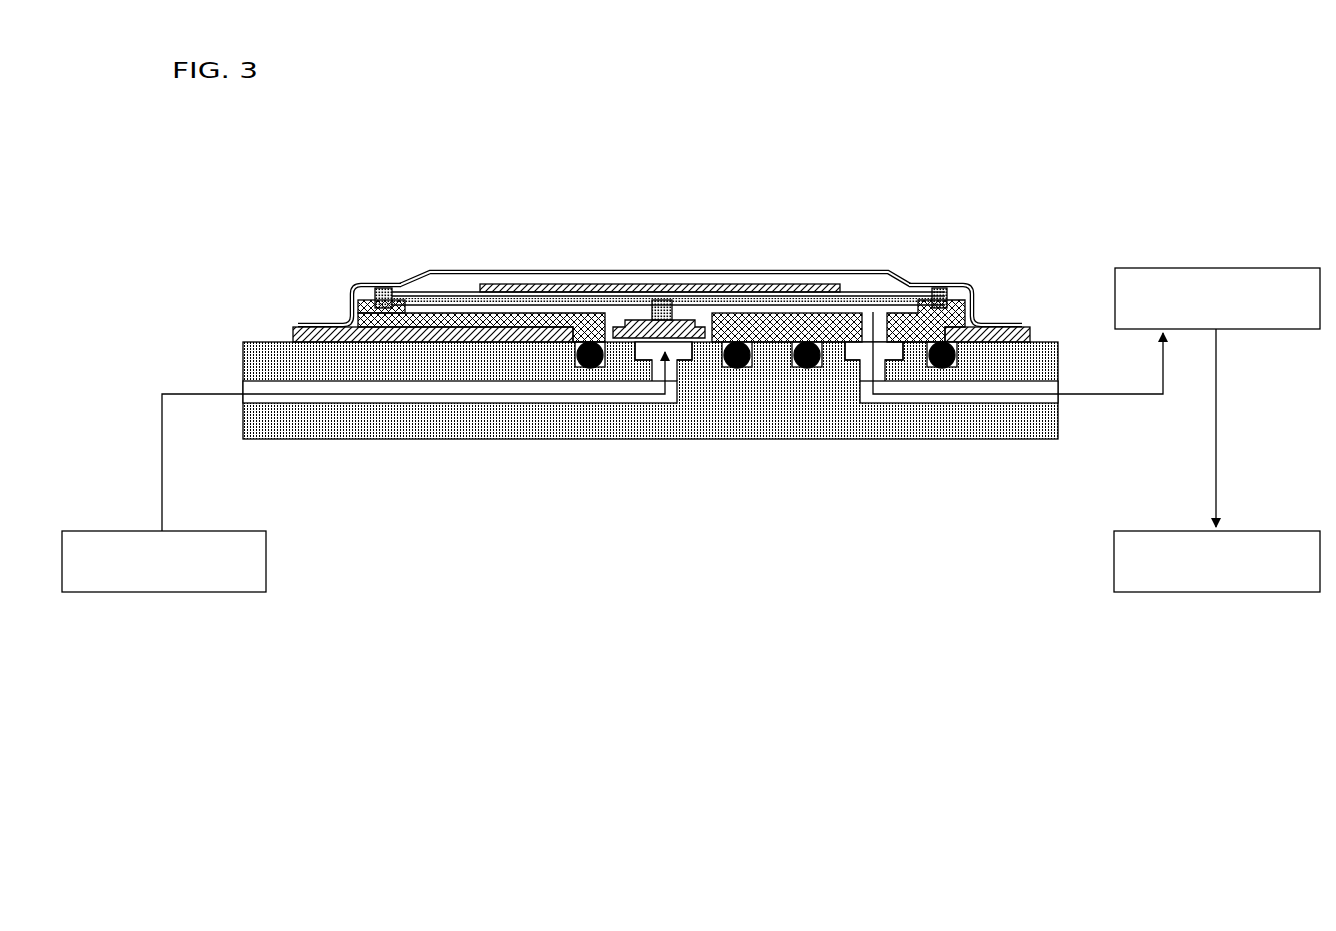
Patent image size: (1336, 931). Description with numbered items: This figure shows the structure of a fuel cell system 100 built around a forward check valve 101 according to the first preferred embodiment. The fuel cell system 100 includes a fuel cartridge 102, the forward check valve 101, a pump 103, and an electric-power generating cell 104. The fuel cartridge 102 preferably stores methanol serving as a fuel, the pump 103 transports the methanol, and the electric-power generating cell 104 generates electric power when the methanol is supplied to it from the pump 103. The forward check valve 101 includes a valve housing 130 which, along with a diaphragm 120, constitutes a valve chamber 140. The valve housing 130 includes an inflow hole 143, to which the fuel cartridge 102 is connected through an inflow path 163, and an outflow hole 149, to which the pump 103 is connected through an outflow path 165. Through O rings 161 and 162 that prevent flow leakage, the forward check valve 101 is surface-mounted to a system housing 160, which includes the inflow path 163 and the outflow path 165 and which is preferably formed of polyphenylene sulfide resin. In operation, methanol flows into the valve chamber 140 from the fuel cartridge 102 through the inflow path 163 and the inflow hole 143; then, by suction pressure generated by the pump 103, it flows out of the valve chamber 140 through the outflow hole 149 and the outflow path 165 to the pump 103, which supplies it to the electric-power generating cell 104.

The fuel cell system 100 is at (980, 155).
The forward check valve 101 is at (870, 266).
The fuel cartridge 102 is at (268, 560).
The pump 103 is at (1262, 268).
The electric-power generating cell 104 is at (1262, 531).
The diaphragm 120 is at (529, 287).
The valve housing 130 is at (357, 306).
The valve chamber 140 is at (804, 310).
The inflow hole 143 is at (673, 303).
The outflow hole 149 is at (885, 327).
The system housing 160 is at (1013, 443).
The O ring 161 is at (598, 370).
The O ring 162 is at (818, 370).
The inflow path 163 is at (330, 400).
The outflow path 165 is at (1036, 397).